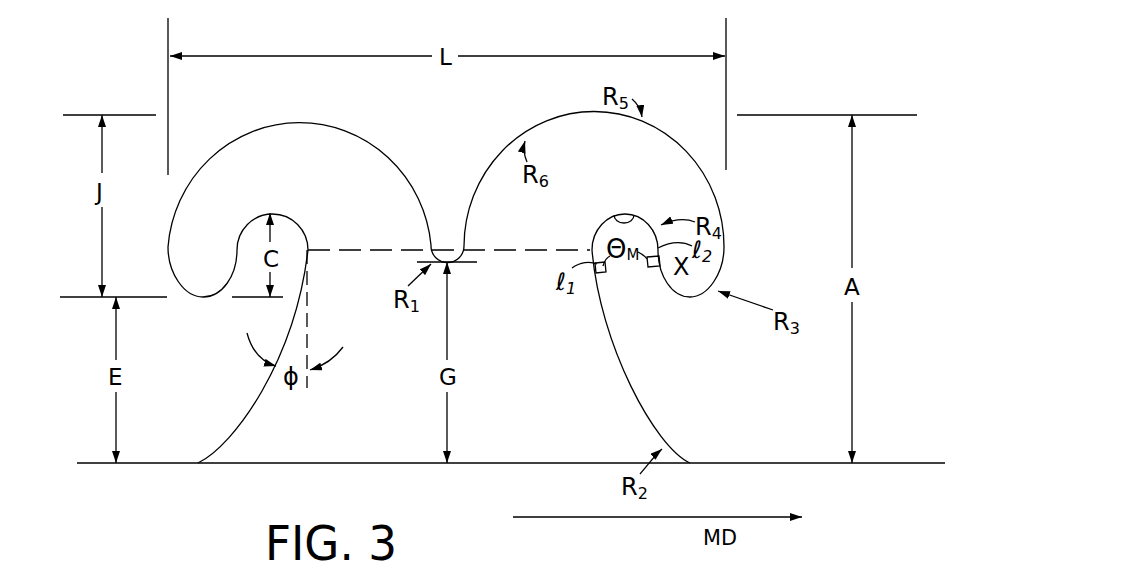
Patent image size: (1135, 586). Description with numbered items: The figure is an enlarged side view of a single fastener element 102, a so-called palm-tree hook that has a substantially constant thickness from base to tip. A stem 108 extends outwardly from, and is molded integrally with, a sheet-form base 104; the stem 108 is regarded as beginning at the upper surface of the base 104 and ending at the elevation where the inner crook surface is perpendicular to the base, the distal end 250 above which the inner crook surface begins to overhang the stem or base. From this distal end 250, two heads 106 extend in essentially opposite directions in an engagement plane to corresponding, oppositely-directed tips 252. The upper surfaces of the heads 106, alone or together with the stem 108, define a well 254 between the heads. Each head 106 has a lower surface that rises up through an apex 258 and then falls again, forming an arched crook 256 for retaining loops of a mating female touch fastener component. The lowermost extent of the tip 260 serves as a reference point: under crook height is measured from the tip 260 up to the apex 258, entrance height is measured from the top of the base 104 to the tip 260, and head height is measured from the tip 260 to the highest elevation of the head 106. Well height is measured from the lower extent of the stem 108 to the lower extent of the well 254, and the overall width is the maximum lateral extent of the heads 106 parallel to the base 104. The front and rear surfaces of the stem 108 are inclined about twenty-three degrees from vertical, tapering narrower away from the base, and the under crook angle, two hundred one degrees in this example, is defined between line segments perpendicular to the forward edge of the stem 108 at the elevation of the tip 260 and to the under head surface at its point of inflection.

The fastener element 102 is at (786, 97).
The sheet-form base 104 is at (888, 463).
The heads 106 is at (226, 218).
The stem 108 is at (575, 398).
The distal end of the stem 250 is at (308, 250).
The tips 252 is at (133, 275).
The well 254 is at (448, 217).
The arched crook 256 is at (247, 300).
The apex 258 is at (270, 213).
The tip 260 is at (203, 297).